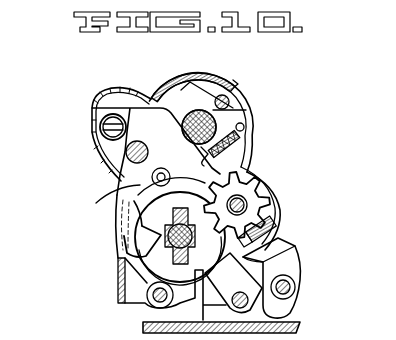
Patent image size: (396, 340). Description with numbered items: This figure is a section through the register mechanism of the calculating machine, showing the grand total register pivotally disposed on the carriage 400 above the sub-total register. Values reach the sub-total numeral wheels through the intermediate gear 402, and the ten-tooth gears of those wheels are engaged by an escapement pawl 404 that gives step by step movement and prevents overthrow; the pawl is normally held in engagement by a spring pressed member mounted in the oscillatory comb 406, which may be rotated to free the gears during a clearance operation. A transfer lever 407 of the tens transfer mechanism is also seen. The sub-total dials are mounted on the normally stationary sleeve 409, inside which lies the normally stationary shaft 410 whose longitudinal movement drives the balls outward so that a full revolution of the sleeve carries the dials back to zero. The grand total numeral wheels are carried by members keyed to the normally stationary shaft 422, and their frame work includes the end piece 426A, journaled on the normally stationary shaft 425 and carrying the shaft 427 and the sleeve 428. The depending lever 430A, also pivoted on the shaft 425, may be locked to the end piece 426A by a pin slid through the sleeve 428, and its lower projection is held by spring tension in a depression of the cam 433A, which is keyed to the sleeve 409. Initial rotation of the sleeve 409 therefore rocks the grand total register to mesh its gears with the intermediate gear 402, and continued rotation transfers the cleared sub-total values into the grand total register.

The carriage 400 is at (143, 328).
The intermediate gear 402 is at (258, 193).
The escapement pawl 404 is at (270, 246).
The oscillatory comb 406 is at (235, 282).
The transfer lever 407 is at (265, 183).
The sleeve 409 is at (247, 210).
The shaft 410 is at (195, 236).
The shaft 422 is at (214, 123).
The shaft 425 is at (126, 155).
The end piece 426A is at (252, 142).
The shaft 427 is at (100, 123).
The sleeve 428 is at (150, 186).
The depending lever 430A is at (118, 220).
The cam 433A is at (140, 262).